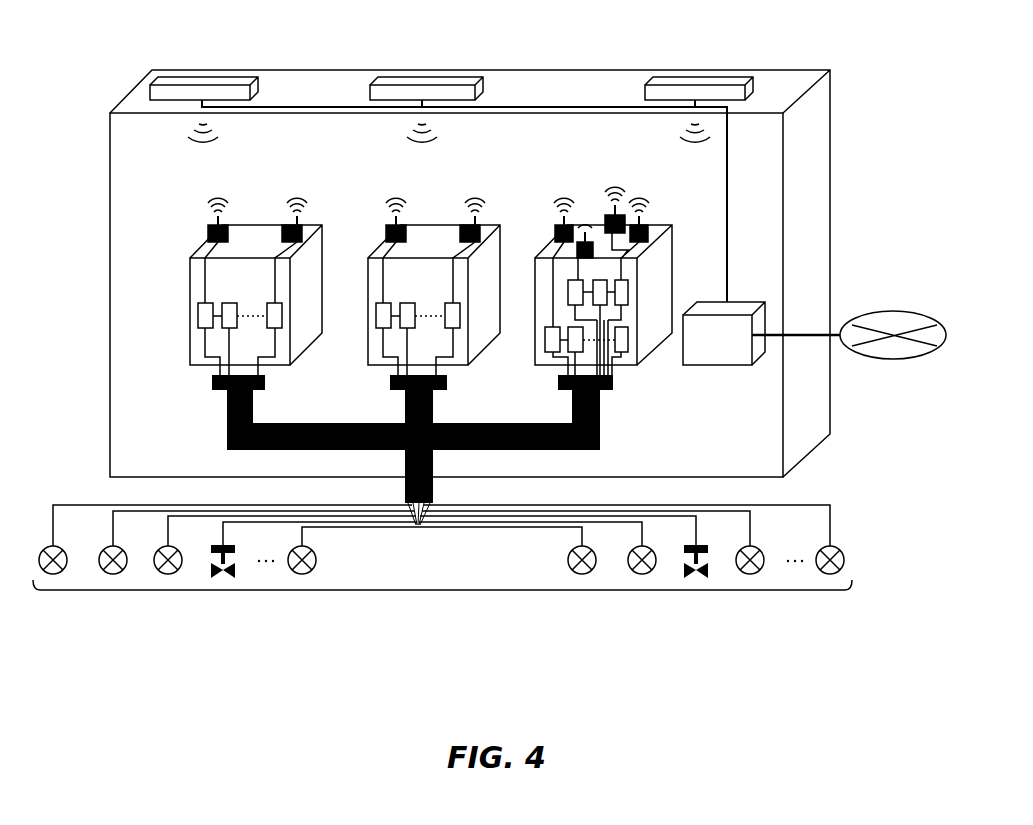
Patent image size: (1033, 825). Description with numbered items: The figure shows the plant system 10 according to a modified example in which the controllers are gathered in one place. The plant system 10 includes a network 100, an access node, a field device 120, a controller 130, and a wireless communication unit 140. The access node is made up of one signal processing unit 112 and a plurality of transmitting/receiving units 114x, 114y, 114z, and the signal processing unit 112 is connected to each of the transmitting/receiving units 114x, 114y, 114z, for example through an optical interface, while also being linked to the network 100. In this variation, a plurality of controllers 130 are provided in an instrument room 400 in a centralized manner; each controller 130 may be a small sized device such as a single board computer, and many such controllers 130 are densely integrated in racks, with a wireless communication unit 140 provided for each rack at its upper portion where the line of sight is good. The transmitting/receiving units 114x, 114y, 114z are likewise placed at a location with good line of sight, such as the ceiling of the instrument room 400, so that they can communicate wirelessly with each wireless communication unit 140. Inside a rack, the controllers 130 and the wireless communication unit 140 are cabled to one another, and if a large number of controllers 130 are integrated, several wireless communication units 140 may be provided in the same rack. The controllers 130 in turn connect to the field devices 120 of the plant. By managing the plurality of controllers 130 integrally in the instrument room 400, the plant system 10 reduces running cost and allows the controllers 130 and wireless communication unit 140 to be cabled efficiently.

The plant system 10 is at (507, 665).
The instrument room 400 is at (428, 67).
The transmitting/receiving unit 114x is at (256, 86).
The transmitting/receiving unit 114y is at (481, 86).
The transmitting/receiving unit 114z is at (646, 91).
The wireless communication unit 140 is at (208, 230).
The controller 130 is at (196, 316).
The signal processing unit 112 is at (717, 377).
The network 100 is at (895, 309).
The field device 120 is at (441, 590).